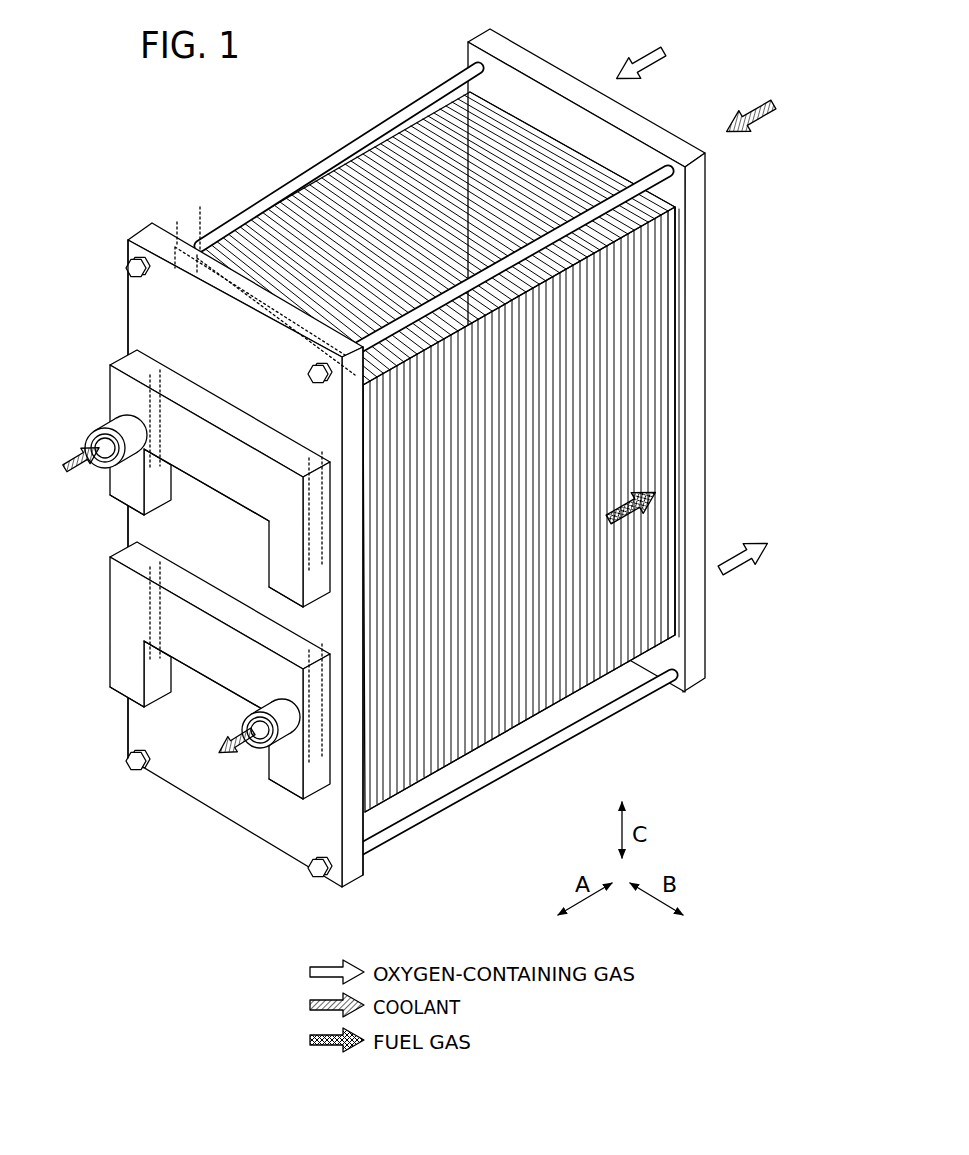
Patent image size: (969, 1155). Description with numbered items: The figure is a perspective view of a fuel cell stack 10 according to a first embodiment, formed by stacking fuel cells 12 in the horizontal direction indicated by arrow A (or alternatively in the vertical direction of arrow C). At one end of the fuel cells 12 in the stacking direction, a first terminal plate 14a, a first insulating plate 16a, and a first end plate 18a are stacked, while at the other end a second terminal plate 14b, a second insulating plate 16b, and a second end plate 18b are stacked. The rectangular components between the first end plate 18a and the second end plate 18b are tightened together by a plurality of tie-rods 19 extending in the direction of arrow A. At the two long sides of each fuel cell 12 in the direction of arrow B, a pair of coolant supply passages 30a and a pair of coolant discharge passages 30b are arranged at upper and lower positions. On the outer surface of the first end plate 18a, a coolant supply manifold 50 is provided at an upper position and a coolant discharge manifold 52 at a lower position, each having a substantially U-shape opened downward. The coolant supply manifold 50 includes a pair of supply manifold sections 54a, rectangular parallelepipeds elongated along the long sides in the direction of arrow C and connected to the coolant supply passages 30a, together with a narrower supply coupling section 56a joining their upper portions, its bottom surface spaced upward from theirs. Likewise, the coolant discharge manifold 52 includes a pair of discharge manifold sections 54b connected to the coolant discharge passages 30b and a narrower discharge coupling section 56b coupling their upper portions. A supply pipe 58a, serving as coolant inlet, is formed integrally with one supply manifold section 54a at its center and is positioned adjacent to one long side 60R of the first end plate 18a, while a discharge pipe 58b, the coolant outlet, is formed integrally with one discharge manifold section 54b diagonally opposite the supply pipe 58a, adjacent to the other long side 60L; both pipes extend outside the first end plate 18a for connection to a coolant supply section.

The fuel cell stack 10 is at (482, 442).
The fuel cells 12 is at (300, 186).
The first terminal plate 14a is at (260, 268).
The second terminal plate 14b is at (667, 290).
The first insulating plate 16a is at (251, 286).
The second insulating plate 16b is at (675, 266).
The first end plate 18a is at (133, 228).
The second end plate 18b is at (556, 80).
The tie-rods 19 is at (395, 113).
The coolant supply passages 30a is at (146, 403).
The coolant discharge passages 30b is at (145, 592).
The coolant supply manifold 50 is at (190, 470).
The coolant discharge manifold 52 is at (190, 674).
The supply manifold sections 54a is at (118, 408).
The discharge manifold sections 54b is at (120, 657).
The supply coupling section 56a is at (212, 440).
The discharge coupling section 56b is at (178, 615).
The supply pipe 58a is at (104, 470).
The discharge pipe 58b is at (242, 718).
The one long side 60R is at (128, 731).
The other long side 60L is at (355, 865).